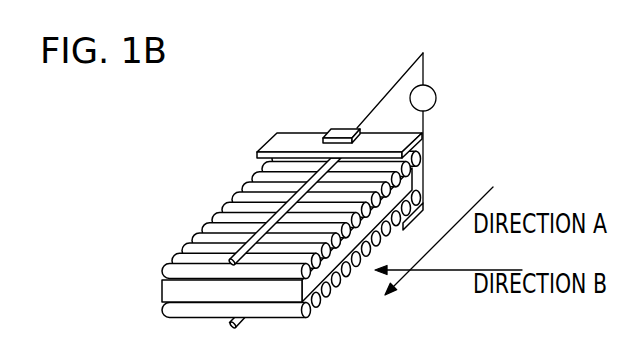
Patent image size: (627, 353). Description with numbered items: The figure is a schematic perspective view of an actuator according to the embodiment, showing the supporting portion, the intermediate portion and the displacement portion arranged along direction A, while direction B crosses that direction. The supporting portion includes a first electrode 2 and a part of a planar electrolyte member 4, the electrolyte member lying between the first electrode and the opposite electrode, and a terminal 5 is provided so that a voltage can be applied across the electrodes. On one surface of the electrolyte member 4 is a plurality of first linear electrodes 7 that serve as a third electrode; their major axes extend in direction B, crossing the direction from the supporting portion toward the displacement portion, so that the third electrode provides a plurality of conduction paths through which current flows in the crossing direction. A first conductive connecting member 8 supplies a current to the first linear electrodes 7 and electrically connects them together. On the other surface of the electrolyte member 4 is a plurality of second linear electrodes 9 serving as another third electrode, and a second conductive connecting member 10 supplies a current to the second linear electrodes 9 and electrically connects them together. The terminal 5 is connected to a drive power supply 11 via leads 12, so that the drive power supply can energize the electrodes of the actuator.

The first electrode 2 is at (277, 134).
The planar electrolyte member 4 is at (160, 293).
The terminal 5 is at (340, 127).
The first linear electrodes 7 is at (214, 212).
The first conductive connecting member 8 is at (231, 264).
The second linear electrodes 9 is at (328, 288).
The second conductive connecting member 10 is at (238, 328).
The drive power supply 11 is at (435, 86).
The leads 12 is at (401, 77).